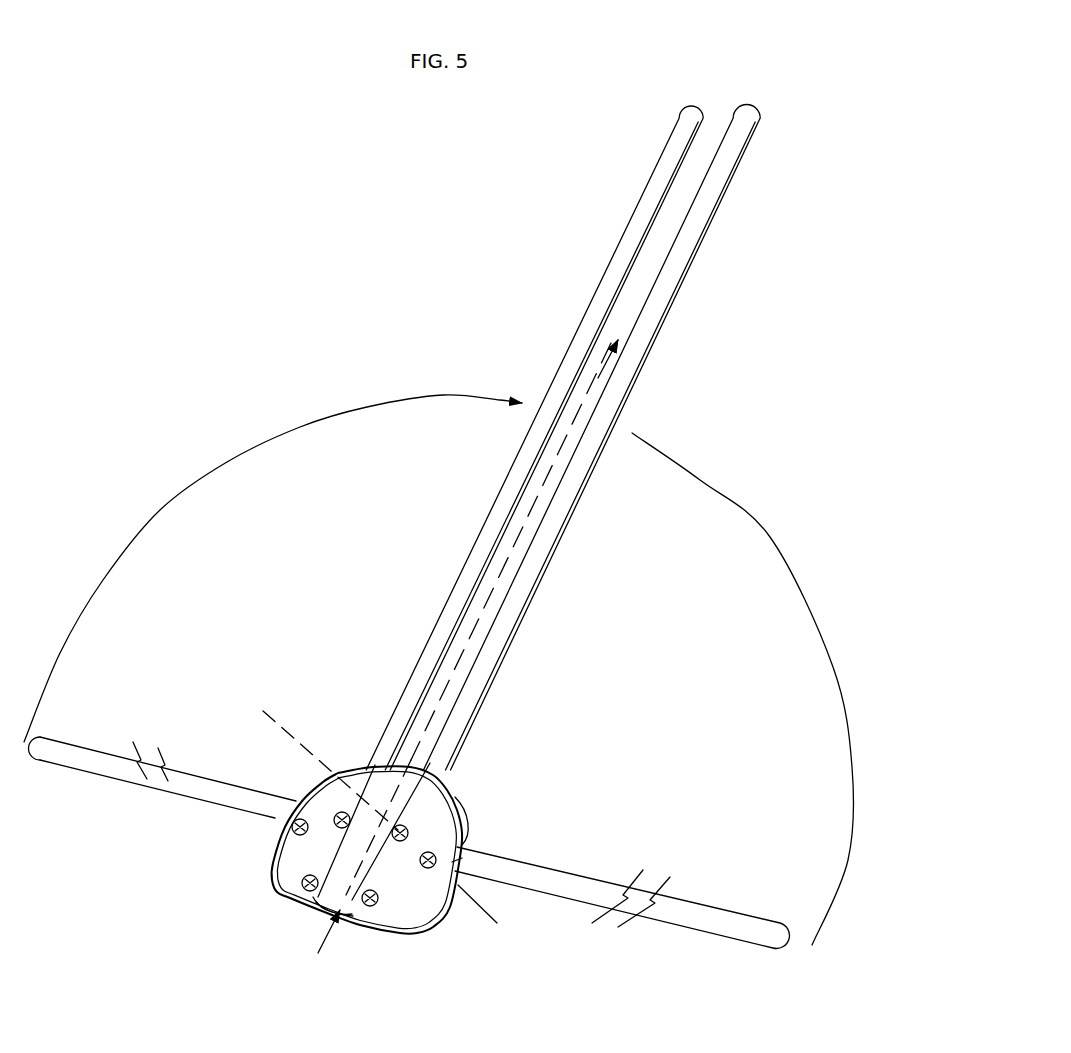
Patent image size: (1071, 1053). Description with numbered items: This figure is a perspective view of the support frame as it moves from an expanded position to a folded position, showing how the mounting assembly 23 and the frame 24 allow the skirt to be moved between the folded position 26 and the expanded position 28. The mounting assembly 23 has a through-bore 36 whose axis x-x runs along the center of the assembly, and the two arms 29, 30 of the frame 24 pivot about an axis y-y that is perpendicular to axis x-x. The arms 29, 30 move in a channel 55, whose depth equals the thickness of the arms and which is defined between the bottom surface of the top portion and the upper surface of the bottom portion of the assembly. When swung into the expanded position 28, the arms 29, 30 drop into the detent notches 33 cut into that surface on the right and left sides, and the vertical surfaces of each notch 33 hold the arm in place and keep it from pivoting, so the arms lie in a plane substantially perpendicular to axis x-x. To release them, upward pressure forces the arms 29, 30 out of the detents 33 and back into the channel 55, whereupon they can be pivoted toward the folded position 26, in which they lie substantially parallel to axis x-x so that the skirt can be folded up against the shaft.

The mounting assembly 23 is at (340, 737).
The frame 24 is at (715, 77).
The folded position 26 is at (700, 480).
The expanded position 28 is at (439, 682).
The arm 29 is at (745, 106).
The arm 30 is at (497, 845).
The detent notch 33 is at (455, 862).
The through-bore 36 is at (338, 912).
The channel 55 is at (458, 800).